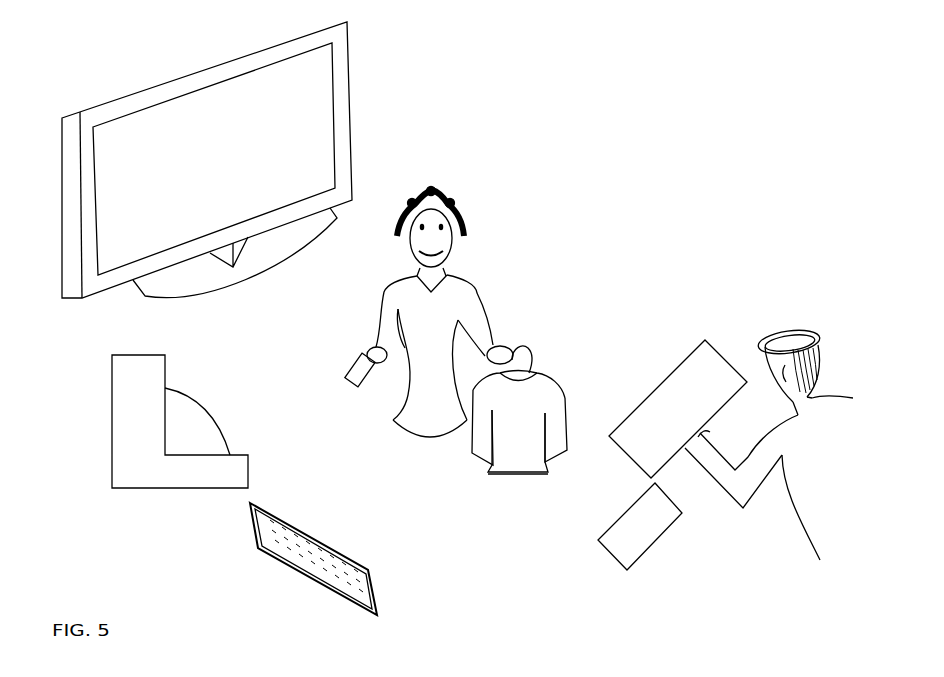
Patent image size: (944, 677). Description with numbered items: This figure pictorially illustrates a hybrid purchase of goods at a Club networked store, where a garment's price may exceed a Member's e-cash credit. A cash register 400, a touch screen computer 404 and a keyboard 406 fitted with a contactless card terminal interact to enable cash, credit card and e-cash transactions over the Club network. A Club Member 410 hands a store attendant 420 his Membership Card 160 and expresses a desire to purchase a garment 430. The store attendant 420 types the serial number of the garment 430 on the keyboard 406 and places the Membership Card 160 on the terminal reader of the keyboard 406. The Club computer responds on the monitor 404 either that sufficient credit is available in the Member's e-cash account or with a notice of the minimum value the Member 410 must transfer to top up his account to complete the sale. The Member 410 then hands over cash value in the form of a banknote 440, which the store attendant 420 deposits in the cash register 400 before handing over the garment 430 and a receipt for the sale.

The touch screen computer 404 is at (350, 135).
The cash register 400 is at (216, 418).
The keyboard 406 is at (358, 605).
The store attendant 420 is at (432, 432).
The garment 430 is at (484, 466).
The Membership Card 160 is at (652, 387).
The Club Member 410 is at (803, 528).
The banknote 440 is at (620, 512).